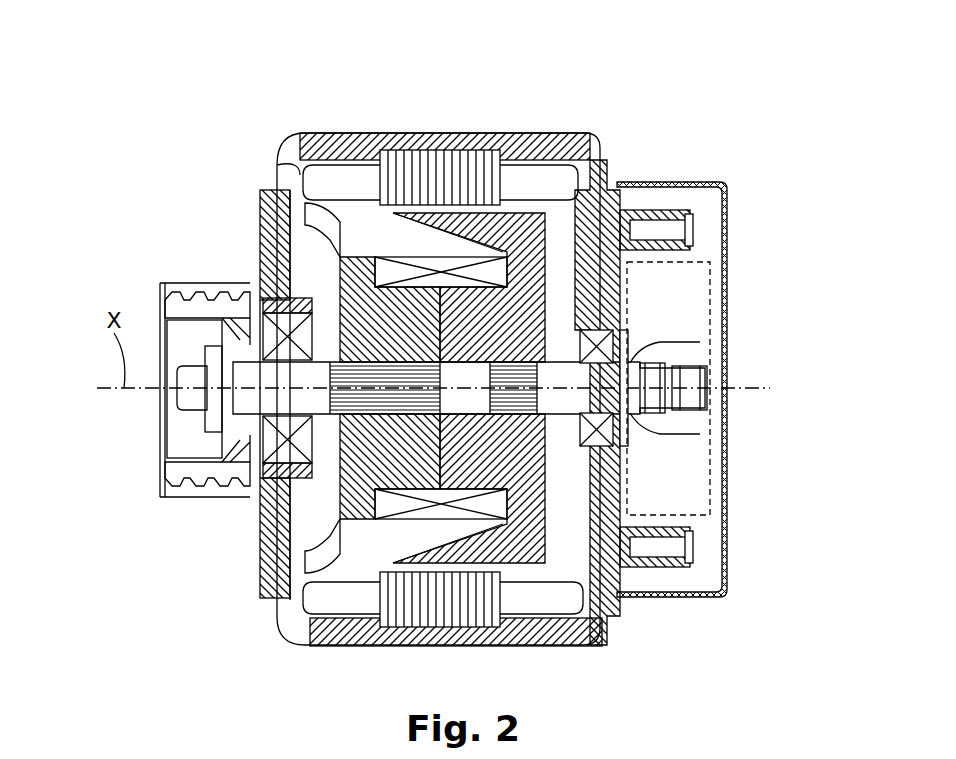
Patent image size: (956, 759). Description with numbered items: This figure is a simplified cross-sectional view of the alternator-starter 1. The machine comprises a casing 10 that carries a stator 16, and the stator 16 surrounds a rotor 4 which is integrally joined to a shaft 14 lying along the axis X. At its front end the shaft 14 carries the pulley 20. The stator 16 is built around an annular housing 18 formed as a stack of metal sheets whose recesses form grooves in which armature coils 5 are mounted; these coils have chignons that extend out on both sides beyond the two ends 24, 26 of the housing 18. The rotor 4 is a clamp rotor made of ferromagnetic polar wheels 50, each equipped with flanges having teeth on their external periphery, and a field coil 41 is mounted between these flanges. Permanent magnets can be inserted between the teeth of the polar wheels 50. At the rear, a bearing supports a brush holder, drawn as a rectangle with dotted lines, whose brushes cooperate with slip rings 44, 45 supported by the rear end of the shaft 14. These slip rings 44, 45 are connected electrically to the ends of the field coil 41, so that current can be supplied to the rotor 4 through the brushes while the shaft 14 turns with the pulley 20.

The alternator-starter 1 is at (429, 53).
The rotor 4 is at (548, 200).
The armature coils 5 is at (320, 152).
The casing 10 is at (451, 357).
The shaft 14 is at (690, 340).
The stator 16 is at (260, 195).
The annular housing 18 is at (476, 150).
The pulley 20 is at (195, 492).
The end of the housing 24 is at (520, 170).
The end of the housing 26 is at (381, 150).
The field coil 41 is at (330, 250).
The slip ring 44 is at (648, 410).
The slip ring 45 is at (697, 378).
The polar wheels 50 is at (375, 388).